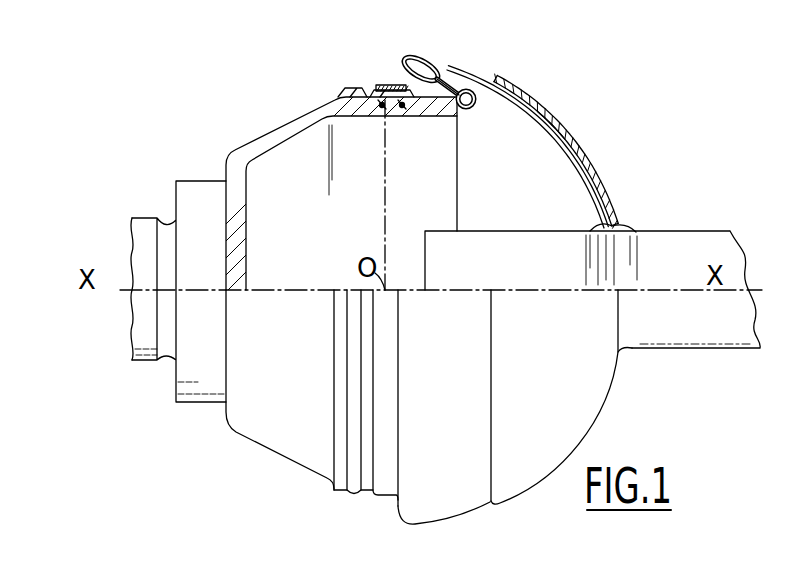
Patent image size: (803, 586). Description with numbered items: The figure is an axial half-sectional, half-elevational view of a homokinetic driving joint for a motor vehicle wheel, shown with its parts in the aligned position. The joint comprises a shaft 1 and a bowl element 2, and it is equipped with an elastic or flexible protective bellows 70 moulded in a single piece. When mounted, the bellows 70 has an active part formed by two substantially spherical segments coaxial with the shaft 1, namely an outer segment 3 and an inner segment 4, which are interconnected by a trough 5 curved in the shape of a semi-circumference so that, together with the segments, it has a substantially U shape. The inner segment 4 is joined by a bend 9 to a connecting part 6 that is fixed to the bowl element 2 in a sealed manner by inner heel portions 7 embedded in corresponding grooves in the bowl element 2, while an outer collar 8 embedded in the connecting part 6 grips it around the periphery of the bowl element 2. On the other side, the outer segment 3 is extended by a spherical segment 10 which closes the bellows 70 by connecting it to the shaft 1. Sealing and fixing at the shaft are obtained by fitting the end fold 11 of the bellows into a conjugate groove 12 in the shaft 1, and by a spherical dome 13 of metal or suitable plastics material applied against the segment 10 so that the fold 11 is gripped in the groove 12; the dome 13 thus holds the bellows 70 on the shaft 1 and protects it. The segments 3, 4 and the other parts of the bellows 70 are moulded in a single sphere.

The shaft 1 is at (684, 349).
The bowl element 2 is at (268, 130).
The outer segment 3 is at (473, 75).
The inner segment 4 is at (440, 77).
The trough 5 is at (404, 60).
The connecting part 6 is at (402, 108).
The inner heel portions 7 is at (380, 108).
The outer collar 8 is at (387, 85).
The bend 9 is at (481, 109).
The spherical segment 10 is at (553, 145).
The end fold 11 is at (590, 233).
The groove 12 is at (634, 232).
The spherical dome 13 is at (556, 113).
The protective bellows 70 is at (465, 52).